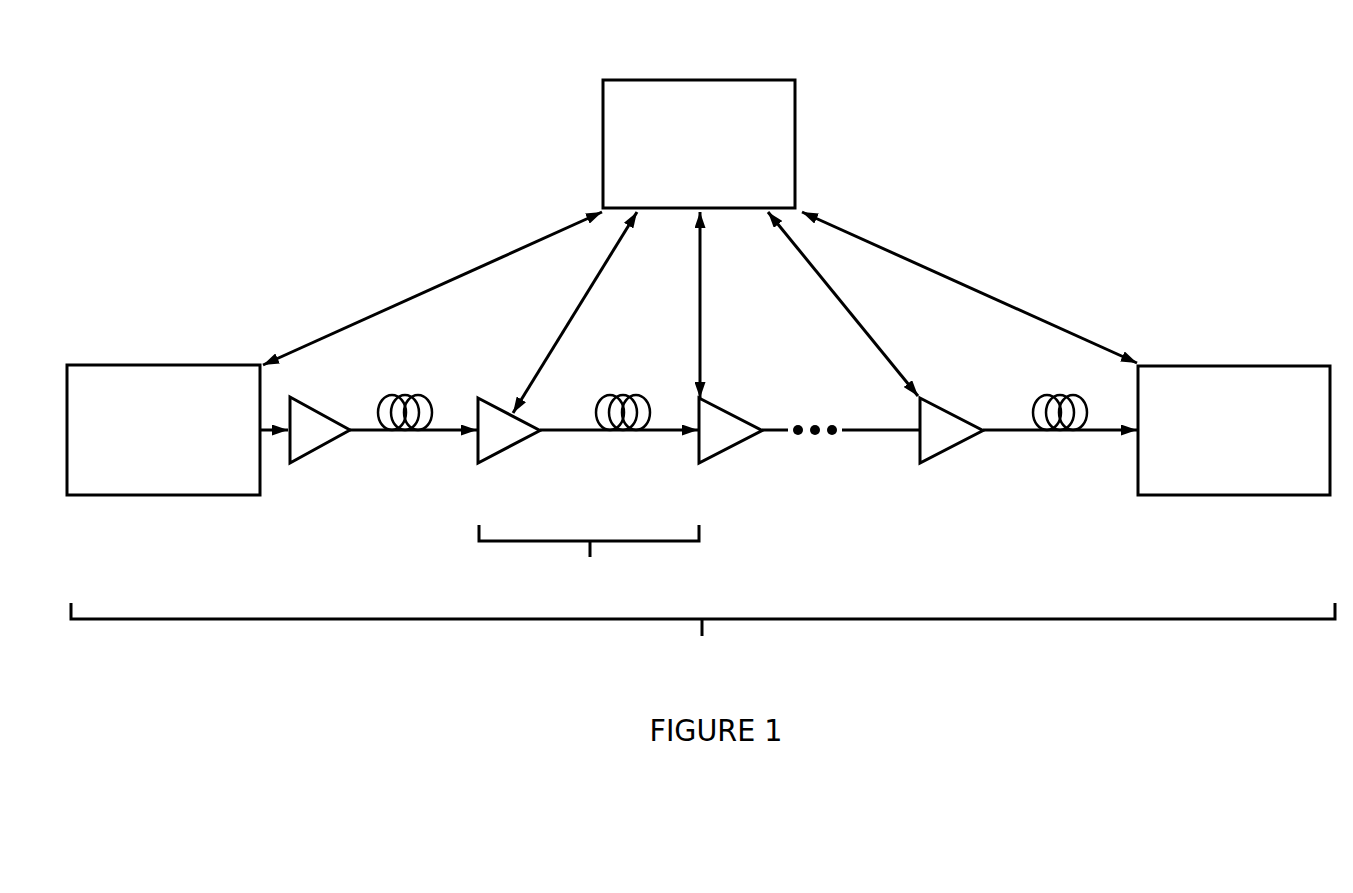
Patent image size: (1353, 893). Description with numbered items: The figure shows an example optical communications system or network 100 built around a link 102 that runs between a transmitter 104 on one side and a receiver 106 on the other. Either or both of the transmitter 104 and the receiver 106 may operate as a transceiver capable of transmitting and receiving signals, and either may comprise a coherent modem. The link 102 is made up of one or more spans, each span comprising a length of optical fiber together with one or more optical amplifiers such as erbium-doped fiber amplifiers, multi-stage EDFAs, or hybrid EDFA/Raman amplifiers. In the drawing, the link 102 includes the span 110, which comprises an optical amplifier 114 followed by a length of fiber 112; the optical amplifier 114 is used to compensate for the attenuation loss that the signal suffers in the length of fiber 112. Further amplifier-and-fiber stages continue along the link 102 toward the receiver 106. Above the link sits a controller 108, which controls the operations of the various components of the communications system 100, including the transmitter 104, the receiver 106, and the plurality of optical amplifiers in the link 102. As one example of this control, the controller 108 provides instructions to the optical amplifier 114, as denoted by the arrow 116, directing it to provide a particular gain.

The optical communications system 100 is at (221, 80).
The link 102 is at (703, 635).
The transmitter 104 is at (163, 430).
The receiver 106 is at (1234, 430).
The controller 108 is at (699, 144).
The span 110 is at (589, 556).
The length of fiber 112 is at (588, 433).
The optical amplifier 114 is at (481, 397).
The arrow 116 is at (598, 283).